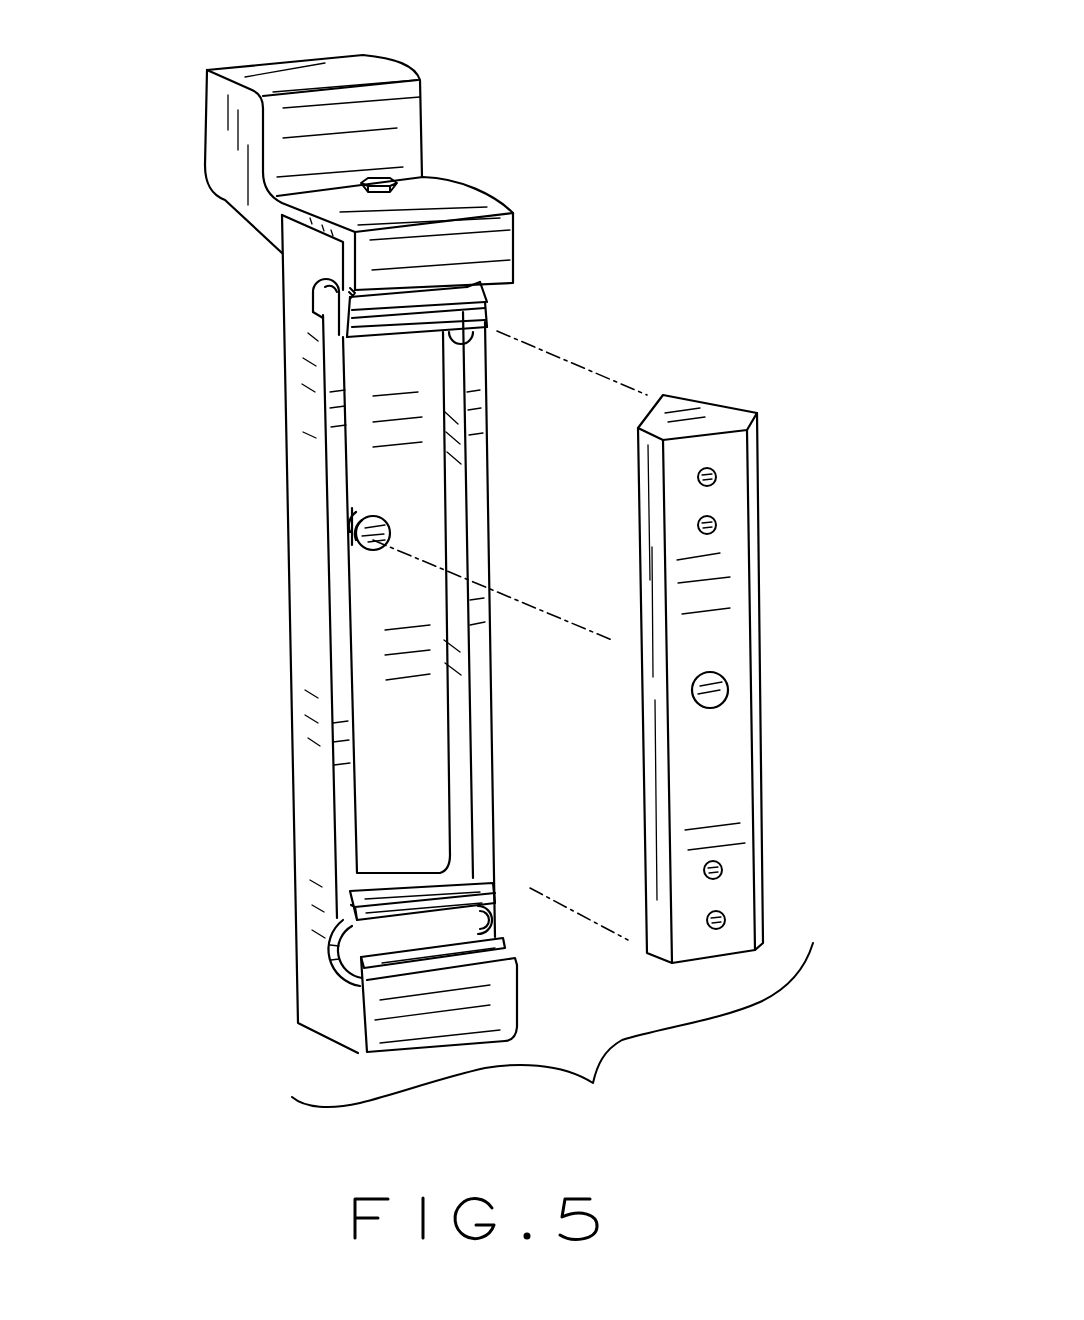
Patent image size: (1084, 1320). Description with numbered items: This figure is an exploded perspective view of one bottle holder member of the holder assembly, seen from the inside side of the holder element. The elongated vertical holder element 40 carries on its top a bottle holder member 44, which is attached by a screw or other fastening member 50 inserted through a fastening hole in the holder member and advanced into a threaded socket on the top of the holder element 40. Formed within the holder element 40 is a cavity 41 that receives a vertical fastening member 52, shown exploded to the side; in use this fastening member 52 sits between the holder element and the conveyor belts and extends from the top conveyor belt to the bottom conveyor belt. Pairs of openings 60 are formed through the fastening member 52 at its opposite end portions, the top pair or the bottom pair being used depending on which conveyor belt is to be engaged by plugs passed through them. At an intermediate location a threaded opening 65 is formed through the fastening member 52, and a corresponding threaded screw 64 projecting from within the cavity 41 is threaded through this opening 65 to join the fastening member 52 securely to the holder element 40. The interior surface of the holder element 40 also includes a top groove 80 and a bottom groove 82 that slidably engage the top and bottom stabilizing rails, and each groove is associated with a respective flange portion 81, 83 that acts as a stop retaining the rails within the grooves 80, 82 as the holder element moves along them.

The holder element 40 is at (333, 634).
The cavity 41 is at (388, 632).
The bottle holder member 44 is at (380, 72).
The fastening member 50 is at (400, 181).
The fastening member 52 is at (775, 679).
The openings 60 is at (716, 477).
The threaded screw 64 is at (388, 530).
The threaded opening 65 is at (727, 682).
The top groove 80 is at (480, 307).
The flange portion 81 is at (343, 340).
The bottom groove 82 is at (352, 944).
The flange portion 83 is at (360, 967).